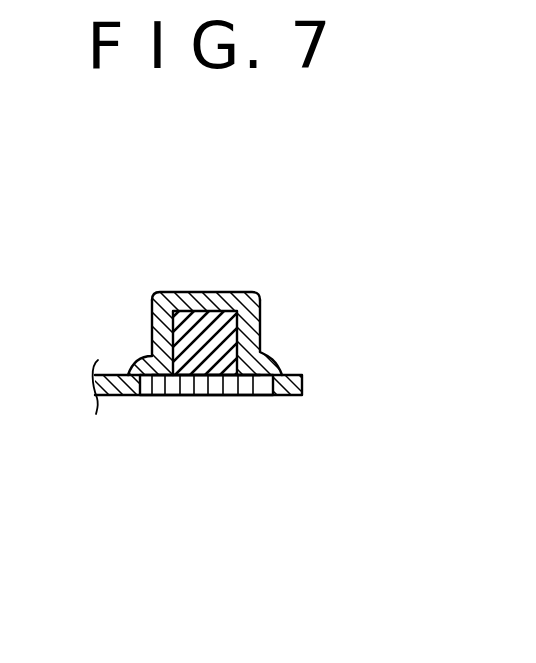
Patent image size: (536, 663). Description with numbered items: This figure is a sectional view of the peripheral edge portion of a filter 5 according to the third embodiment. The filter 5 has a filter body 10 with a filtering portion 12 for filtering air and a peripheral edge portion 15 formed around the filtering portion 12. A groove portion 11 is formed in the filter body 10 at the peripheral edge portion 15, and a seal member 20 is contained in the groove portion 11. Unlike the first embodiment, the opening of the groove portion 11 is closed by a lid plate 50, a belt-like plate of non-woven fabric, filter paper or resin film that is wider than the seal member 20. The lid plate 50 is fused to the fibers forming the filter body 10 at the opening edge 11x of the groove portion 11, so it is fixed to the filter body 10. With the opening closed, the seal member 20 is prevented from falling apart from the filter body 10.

The filter 5 is at (270, 260).
The filter body 10 is at (120, 277).
The groove portion 11 is at (183, 310).
The opening edge 11x is at (159, 381).
The filtering portion 12 is at (117, 380).
The peripheral edge portion 15 is at (203, 300).
The seal member 20 is at (226, 338).
The lid plate 50 is at (200, 383).